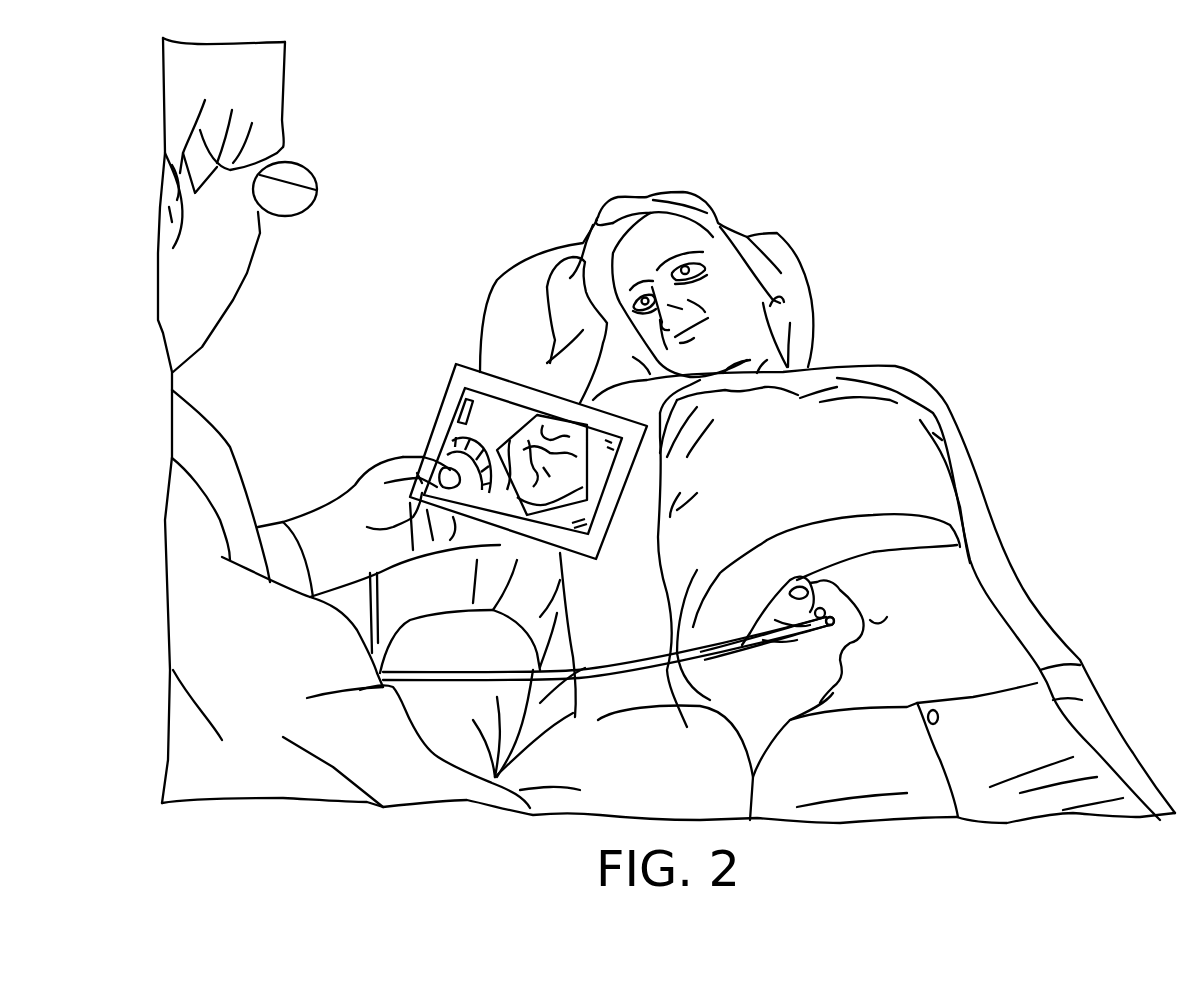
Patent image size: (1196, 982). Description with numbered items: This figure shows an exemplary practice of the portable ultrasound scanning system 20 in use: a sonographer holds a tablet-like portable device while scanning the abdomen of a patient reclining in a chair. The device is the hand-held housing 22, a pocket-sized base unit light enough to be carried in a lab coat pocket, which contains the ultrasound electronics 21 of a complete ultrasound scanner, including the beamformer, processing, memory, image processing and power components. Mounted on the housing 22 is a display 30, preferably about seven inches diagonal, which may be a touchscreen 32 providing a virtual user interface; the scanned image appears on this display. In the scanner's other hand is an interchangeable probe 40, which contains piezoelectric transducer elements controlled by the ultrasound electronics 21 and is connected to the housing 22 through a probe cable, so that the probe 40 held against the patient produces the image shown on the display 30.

The portable ultrasound scanning system 20 is at (428, 276).
The ultrasound electronics 21 is at (380, 318).
The hand-held housing 22 is at (441, 405).
The display 30 is at (423, 449).
The touchscreen 32 is at (505, 422).
The interchangeable probe 40 is at (957, 545).